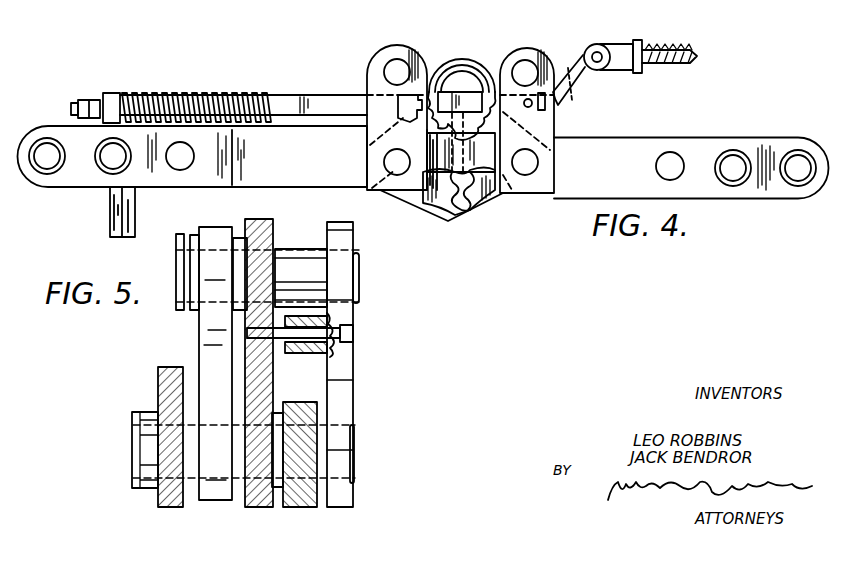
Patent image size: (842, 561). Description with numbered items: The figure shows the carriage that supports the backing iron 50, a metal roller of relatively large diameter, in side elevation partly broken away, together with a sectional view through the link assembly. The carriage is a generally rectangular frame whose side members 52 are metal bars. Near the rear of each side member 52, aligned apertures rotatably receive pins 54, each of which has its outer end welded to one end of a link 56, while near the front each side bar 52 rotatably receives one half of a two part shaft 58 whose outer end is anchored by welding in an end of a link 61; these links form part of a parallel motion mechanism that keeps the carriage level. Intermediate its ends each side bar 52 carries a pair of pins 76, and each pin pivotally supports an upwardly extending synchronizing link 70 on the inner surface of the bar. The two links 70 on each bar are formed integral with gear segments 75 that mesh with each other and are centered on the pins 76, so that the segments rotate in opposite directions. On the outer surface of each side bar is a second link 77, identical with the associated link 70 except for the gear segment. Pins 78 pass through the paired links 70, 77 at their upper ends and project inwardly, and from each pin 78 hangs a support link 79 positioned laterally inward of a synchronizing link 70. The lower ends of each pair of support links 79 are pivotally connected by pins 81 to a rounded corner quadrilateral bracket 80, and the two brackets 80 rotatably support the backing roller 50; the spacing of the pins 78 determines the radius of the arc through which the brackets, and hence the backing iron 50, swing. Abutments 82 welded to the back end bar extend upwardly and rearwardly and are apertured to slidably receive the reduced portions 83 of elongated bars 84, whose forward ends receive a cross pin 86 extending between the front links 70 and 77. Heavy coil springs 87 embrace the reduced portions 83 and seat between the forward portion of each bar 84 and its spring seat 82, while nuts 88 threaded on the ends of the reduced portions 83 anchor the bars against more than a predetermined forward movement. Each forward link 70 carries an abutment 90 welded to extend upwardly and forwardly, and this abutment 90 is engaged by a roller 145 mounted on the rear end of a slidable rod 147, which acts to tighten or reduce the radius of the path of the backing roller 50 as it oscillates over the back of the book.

In FIG. 4, the backing iron 50 is at (468, 70).
In FIG. 4, the side member 52 is at (318, 162).
In FIG. 5, the side member 52 is at (345, 462).
In FIG. 4, the pin 54 is at (180, 148).
In FIG. 4, the link 56 is at (48, 180).
In FIG. 4, the two part shaft 58 is at (670, 163).
In FIG. 4, the link 61 is at (712, 148).
In FIG. 4, the synchronizing link 70 is at (436, 56).
In FIG. 5, the synchronizing link 70 is at (265, 238).
In FIG. 4, the gear segment 75 is at (460, 204).
In FIG. 4, the pin 76 is at (393, 162).
In FIG. 5, the pin 76 is at (362, 425).
In FIG. 4, the second link 77 is at (395, 47).
In FIG. 5, the second link 77 is at (350, 242).
In FIG. 4, the pin 78 is at (400, 70).
In FIG. 5, the pin 78 is at (312, 262).
In FIG. 5, the support link 79 is at (204, 315).
In FIG. 4, the bracket 80 is at (506, 200).
In FIG. 5, the bracket 80 is at (160, 382).
In FIG. 5, the pin 81 is at (212, 430).
In FIG. 4, the abutment 82 is at (114, 95).
In FIG. 4, the reduced portion 83 is at (72, 106).
In FIG. 4, the bar 84 is at (332, 100).
In FIG. 5, the bar 84 is at (314, 352).
In FIG. 4, the cross pin 86 is at (574, 68).
In FIG. 5, the cross pin 86 is at (354, 331).
In FIG. 4, the coil spring 87 is at (244, 94).
In FIG. 4, the nut 88 is at (90, 100).
In FIG. 4, the abutment 90 is at (578, 94).
In FIG. 4, the roller 145 is at (596, 44).
In FIG. 4, the rod 147 is at (692, 56).